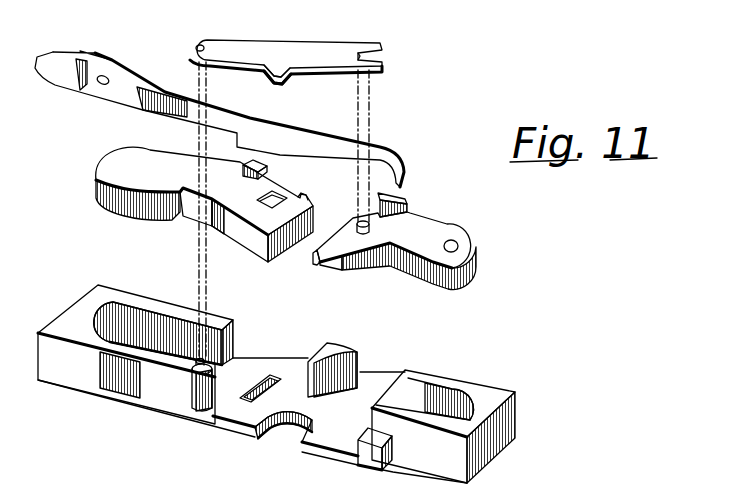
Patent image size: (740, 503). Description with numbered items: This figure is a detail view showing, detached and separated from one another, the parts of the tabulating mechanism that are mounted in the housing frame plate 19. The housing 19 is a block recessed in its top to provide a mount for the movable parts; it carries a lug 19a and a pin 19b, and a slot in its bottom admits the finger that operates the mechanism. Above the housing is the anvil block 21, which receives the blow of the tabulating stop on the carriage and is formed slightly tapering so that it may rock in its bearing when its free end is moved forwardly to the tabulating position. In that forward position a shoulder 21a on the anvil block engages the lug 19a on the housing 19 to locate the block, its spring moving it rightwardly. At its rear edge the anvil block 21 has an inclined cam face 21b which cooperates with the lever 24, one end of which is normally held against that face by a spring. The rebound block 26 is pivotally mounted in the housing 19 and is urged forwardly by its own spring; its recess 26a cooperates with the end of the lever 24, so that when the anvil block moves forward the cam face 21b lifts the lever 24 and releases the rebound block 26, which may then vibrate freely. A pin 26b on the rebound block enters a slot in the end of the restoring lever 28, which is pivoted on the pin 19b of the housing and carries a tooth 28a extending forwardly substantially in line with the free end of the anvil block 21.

The housing frame plate 19 is at (230, 413).
The lug 19a is at (357, 353).
The pin 19b is at (192, 372).
The anvil block 21 is at (204, 204).
The shoulder 21a is at (303, 207).
The cam face 21b is at (240, 163).
The lever 24 is at (258, 128).
The rebound block 26 is at (440, 231).
The recess 26a is at (404, 212).
The pin 26b is at (370, 236).
The restoring lever 28 is at (309, 50).
The tooth 28a is at (276, 77).